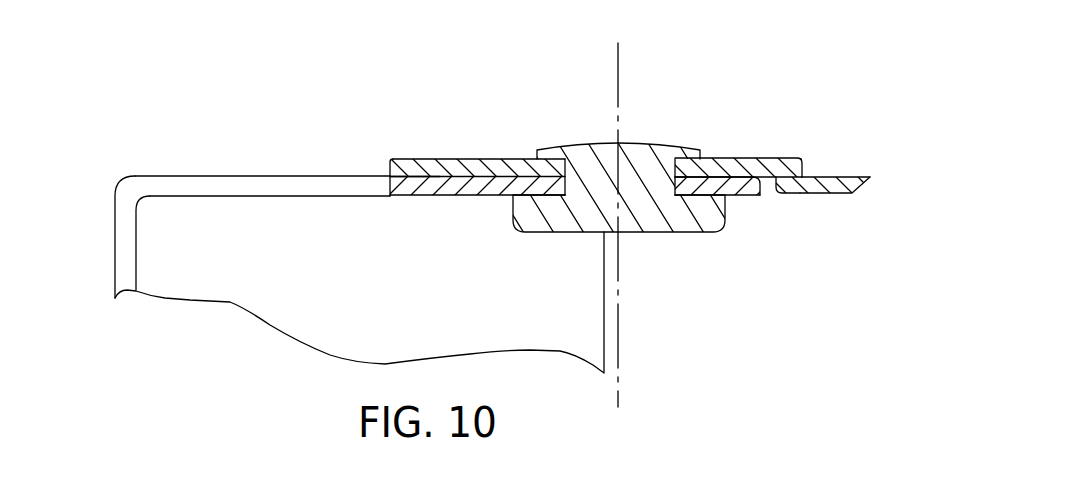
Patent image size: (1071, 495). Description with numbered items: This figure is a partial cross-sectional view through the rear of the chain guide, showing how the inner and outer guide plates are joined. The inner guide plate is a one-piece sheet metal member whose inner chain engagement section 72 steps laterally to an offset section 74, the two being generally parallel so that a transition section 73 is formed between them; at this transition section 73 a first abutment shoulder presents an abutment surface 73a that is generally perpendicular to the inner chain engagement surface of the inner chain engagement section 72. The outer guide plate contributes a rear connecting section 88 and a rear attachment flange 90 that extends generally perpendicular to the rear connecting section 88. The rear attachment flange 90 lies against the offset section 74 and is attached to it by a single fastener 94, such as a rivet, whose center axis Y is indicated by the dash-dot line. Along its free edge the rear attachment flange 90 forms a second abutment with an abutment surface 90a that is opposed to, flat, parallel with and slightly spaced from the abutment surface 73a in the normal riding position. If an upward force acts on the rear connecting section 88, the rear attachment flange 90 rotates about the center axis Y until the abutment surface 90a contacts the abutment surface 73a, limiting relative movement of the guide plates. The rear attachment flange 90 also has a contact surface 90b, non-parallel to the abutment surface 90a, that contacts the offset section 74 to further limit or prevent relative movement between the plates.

The center axis Y is at (618, 68).
The inner chain engagement section 72 is at (843, 182).
The transition section 73 is at (803, 176).
The abutment surface 73a is at (778, 188).
The offset section 74 is at (503, 163).
The rear connecting section 88 is at (127, 250).
The rear attachment flange 90 is at (270, 187).
The abutment surface 90a is at (760, 178).
The contact surface 90b is at (468, 170).
The fastener 94 is at (650, 157).